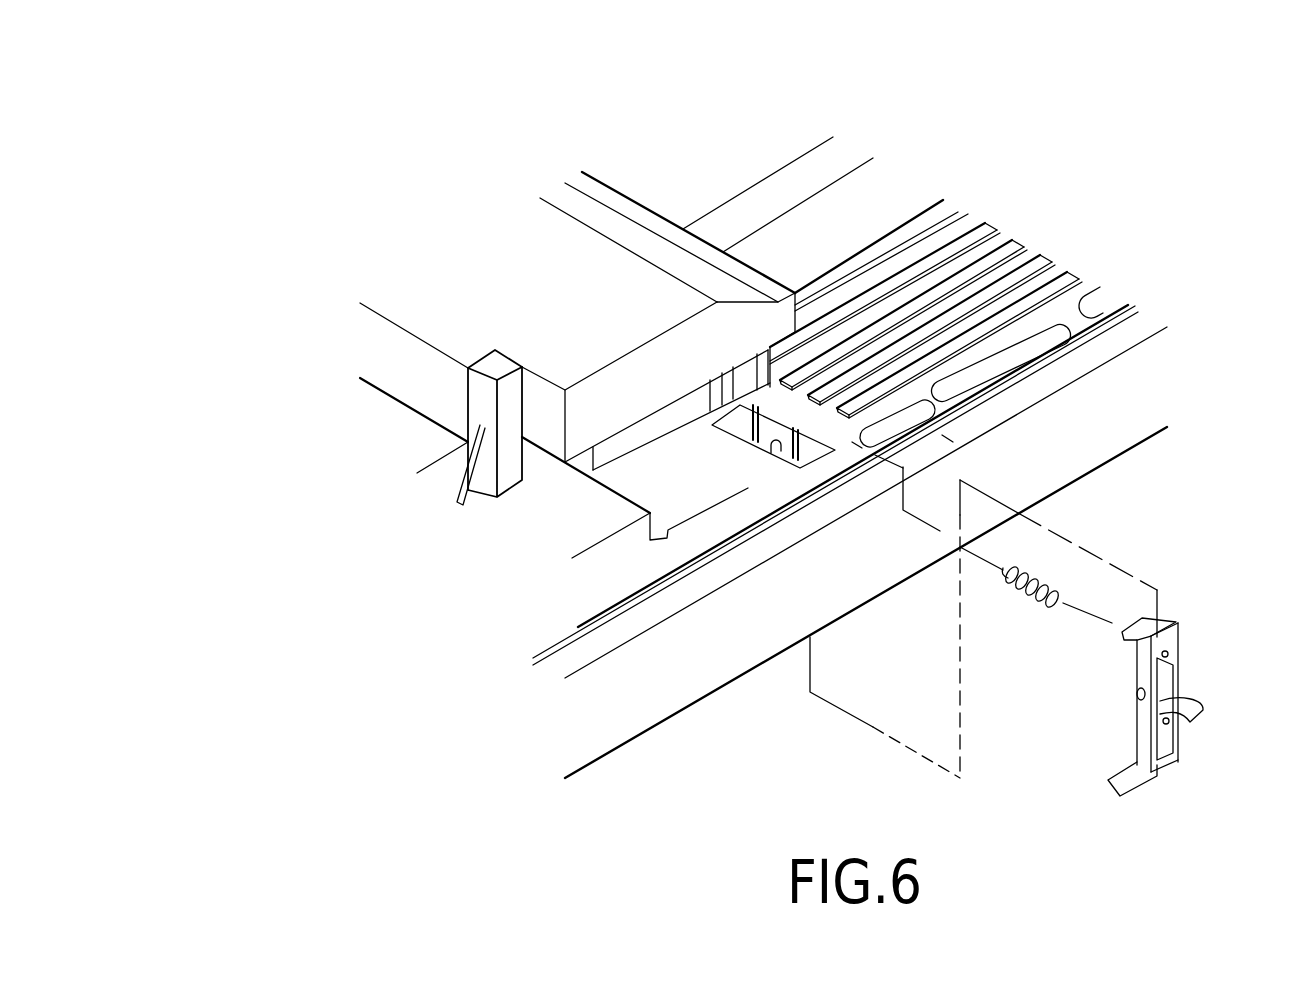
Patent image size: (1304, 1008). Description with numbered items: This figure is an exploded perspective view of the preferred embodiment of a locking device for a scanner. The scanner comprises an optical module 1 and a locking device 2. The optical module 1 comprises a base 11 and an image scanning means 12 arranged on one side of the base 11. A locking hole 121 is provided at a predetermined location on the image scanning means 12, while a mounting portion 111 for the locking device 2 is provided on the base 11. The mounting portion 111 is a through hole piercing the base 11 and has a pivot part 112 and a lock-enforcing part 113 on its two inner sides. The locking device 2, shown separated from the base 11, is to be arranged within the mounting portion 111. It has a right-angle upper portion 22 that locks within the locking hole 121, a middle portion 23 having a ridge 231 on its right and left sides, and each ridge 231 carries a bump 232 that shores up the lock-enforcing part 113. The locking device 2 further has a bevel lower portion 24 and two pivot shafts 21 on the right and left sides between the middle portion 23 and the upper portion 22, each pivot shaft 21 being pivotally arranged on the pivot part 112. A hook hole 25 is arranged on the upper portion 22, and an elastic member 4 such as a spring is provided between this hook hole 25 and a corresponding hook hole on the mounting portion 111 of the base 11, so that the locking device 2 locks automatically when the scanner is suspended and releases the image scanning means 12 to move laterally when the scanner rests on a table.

The optical module 1 is at (787, 113).
The base 11 is at (887, 197).
The image scanning means 12 is at (490, 252).
The locking hole 121 is at (745, 375).
The mounting portion 111 is at (800, 442).
The pivot part 112 is at (762, 438).
The lock-enforcing part 113 is at (797, 452).
The elastic member 4 is at (1040, 580).
The locking device 2 is at (1154, 681).
The upper portion 22 is at (1135, 640).
The pivot shaft 21 is at (1135, 697).
The middle portion 23 is at (1146, 713).
The ridge 231 is at (1190, 706).
The bump 232 is at (1172, 735).
The hook hole 25 is at (1169, 653).
The lower portion 24 is at (1110, 783).